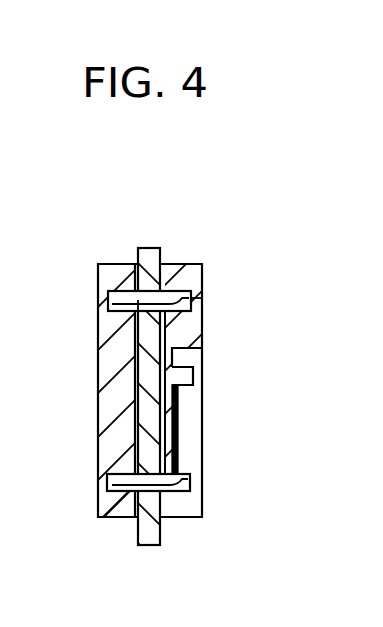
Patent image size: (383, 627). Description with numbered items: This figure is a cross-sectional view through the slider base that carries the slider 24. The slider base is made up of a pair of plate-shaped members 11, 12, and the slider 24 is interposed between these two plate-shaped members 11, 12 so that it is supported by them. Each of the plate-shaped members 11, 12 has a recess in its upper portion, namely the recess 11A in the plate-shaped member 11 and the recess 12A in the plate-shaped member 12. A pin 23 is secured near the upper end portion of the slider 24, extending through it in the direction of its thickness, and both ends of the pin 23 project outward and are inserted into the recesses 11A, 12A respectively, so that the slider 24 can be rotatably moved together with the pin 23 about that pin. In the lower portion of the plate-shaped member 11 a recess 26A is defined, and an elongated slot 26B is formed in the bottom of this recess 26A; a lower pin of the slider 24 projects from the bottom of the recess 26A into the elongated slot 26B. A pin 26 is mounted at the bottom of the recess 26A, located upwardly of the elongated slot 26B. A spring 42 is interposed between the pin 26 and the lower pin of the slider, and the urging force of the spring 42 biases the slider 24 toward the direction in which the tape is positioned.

The plate-shaped member 11 is at (203, 277).
The recess 11A is at (202, 298).
The plate-shaped member 12 is at (113, 513).
The recess 12A is at (104, 292).
The pin 23 is at (136, 313).
The slider 24 is at (148, 248).
The pin 26 is at (193, 375).
The recess 26A is at (200, 352).
The elongated slot 26B is at (191, 478).
The spring 42 is at (175, 428).